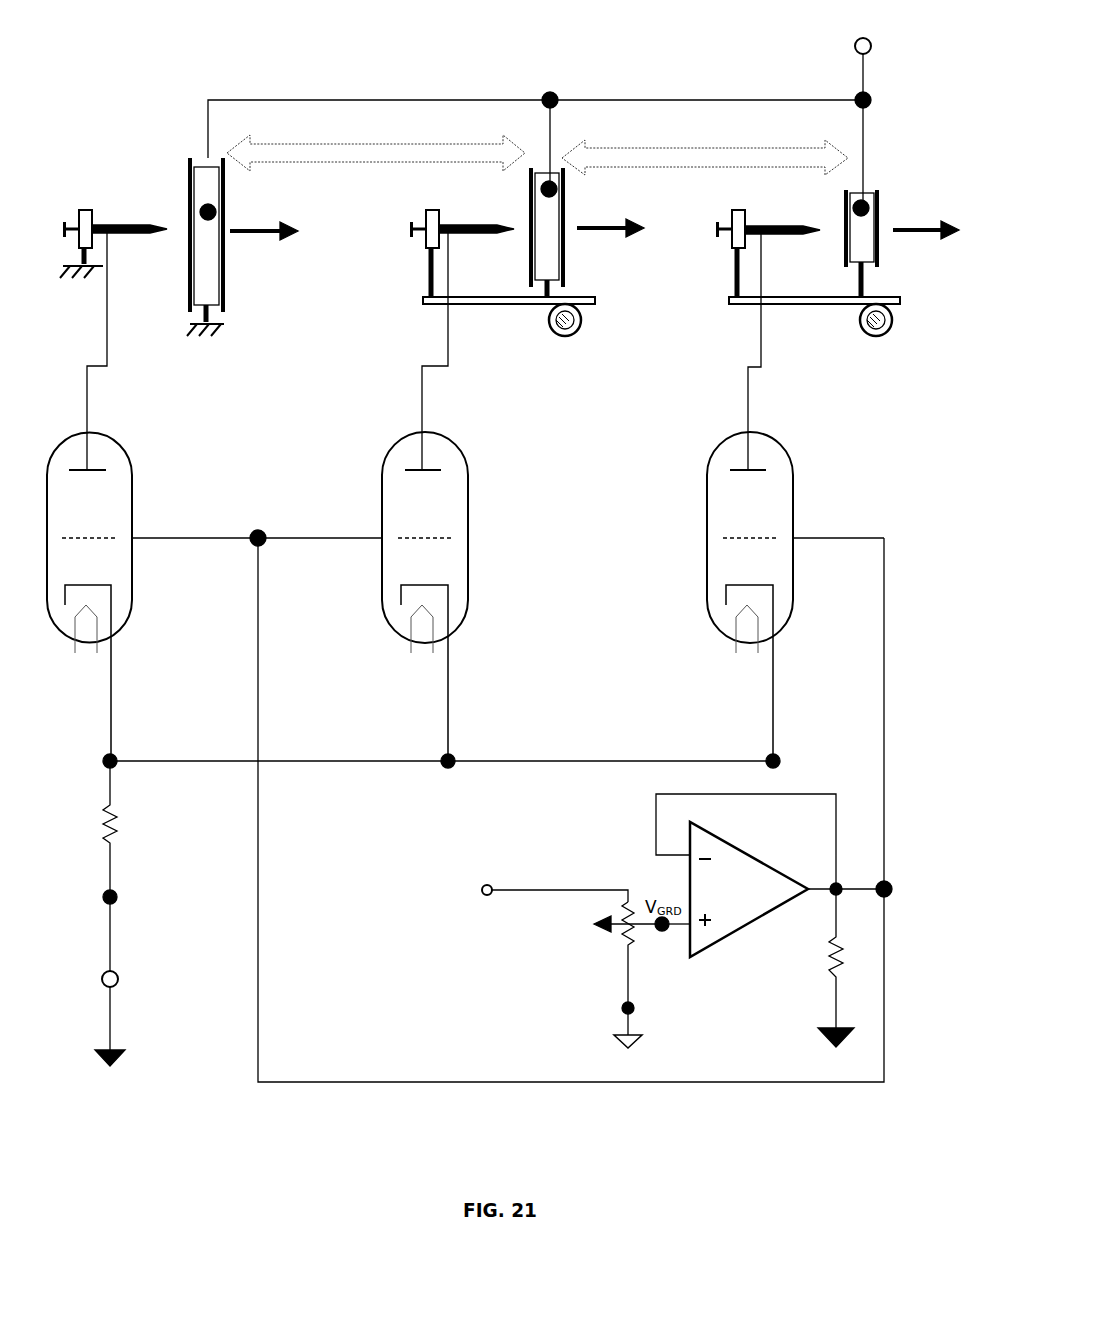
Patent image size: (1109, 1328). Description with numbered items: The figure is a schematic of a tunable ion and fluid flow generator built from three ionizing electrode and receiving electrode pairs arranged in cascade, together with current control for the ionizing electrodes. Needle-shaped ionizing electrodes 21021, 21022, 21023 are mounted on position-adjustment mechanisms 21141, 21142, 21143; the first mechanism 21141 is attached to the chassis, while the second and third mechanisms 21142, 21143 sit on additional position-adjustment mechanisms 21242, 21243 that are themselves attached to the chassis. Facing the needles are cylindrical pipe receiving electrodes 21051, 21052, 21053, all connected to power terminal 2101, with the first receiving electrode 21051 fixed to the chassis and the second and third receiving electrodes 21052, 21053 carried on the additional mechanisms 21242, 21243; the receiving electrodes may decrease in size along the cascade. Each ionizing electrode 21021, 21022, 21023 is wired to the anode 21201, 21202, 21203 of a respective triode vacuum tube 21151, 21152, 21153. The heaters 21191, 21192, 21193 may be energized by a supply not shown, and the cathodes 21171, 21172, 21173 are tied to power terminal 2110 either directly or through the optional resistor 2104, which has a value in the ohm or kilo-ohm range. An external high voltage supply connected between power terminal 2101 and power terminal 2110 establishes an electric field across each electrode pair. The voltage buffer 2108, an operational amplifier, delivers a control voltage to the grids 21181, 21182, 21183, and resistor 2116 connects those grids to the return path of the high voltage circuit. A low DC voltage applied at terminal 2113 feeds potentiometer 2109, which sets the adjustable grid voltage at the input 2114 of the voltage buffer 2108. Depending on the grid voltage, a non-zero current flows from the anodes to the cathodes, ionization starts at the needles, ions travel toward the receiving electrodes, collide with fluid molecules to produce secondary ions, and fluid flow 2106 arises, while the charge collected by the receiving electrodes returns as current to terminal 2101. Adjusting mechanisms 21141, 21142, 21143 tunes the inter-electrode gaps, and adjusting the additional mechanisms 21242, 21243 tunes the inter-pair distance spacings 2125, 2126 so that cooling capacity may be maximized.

The power terminal 2101 is at (857, 47).
The optional resistor 2104 is at (118, 838).
The fluid flow 2106 is at (258, 229).
The voltage buffer 2108 is at (708, 948).
The potentiometer 2109 is at (622, 935).
The power terminal 2110 is at (118, 979).
The terminal 2113 is at (485, 885).
The input of voltage buffer 2114 is at (662, 932).
The resistor 2116 is at (827, 963).
The inter-pair distance spacing 2125 is at (425, 145).
The inter-pair distance spacing 2126 is at (752, 148).
The ionizing electrode 21021 is at (150, 191).
The ionizing electrode 21022 is at (470, 228).
The ionizing electrode 21023 is at (794, 228).
The receiving electrode 21051 is at (212, 306).
The receiving electrode 21052 is at (539, 273).
The receiving electrode 21053 is at (853, 266).
The position-adjustment mechanism 21141 is at (86, 210).
The position-adjustment mechanism 21142 is at (413, 243).
The position-adjustment mechanism 21143 is at (728, 243).
The triode vacuum tube 21151 is at (132, 480).
The triode vacuum tube 21152 is at (468, 480).
The triode vacuum tube 21153 is at (793, 480).
The cathode 21171 is at (90, 586).
The cathode 21172 is at (426, 586).
The cathode 21173 is at (751, 586).
The grid 21181 is at (104, 533).
The grid 21182 is at (440, 533).
The grid 21183 is at (765, 533).
The heater 21191 is at (95, 642).
The heater 21192 is at (431, 642).
The heater 21193 is at (756, 642).
The anode 21201 is at (95, 462).
The anode 21202 is at (431, 462).
The anode 21203 is at (756, 462).
The additional position-adjustment mechanism 21242 is at (586, 304).
The additional position-adjustment mechanism 21243 is at (843, 306).